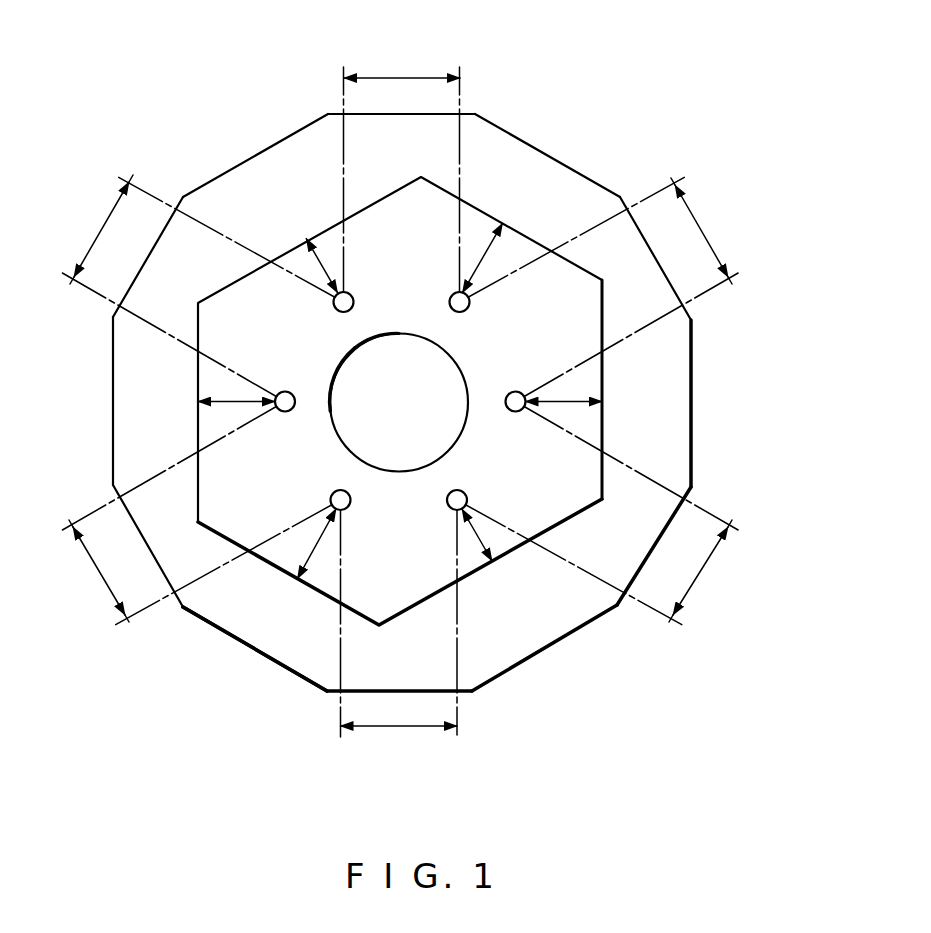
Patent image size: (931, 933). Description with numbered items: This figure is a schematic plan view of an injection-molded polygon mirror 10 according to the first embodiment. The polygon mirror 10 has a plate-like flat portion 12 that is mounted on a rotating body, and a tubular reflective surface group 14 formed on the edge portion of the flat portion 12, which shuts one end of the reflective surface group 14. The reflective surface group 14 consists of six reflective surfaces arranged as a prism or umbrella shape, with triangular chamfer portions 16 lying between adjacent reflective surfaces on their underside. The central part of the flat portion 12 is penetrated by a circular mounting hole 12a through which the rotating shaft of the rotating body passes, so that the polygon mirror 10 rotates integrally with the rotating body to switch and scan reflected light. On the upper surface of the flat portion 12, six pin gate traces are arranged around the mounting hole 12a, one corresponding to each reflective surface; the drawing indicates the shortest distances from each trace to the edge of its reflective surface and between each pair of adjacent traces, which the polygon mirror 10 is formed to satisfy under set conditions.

The polygon mirror 10 is at (506, 95).
The flat portion 12 is at (557, 370).
The mounting hole 12a is at (340, 425).
The reflective surface group 14 is at (303, 681).
The chamfer portions 16 is at (467, 694).